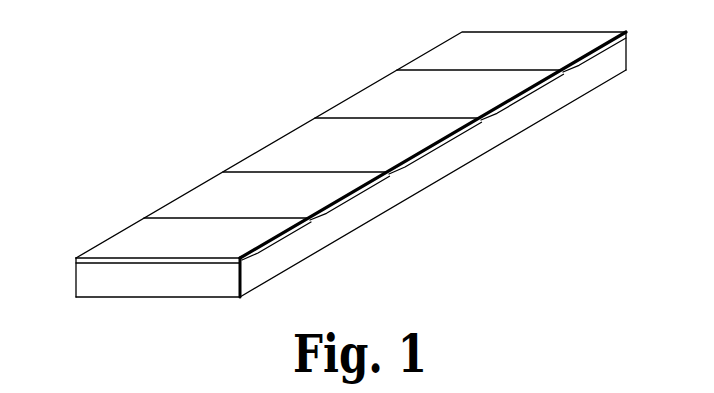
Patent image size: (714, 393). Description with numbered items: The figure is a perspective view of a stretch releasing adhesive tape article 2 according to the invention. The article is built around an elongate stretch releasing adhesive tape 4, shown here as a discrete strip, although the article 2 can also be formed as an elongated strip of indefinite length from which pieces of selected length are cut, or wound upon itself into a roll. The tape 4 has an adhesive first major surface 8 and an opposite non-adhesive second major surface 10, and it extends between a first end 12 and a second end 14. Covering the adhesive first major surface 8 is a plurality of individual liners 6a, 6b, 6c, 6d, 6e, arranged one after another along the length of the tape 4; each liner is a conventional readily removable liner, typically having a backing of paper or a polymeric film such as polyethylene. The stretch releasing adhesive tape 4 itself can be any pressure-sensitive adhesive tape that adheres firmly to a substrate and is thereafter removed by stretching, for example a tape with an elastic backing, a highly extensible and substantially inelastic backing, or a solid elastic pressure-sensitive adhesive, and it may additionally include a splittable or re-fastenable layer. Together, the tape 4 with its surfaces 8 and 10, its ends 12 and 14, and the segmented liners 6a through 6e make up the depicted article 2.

The stretch releasing adhesive tape article 2 is at (262, 81).
The stretch releasing adhesive tape 4 is at (507, 148).
The liner 6a is at (249, 237).
The liner 6b is at (322, 194).
The liner 6c is at (405, 141).
The liner 6d is at (498, 89).
The liner 6e is at (567, 54).
The adhesive first major surface 8 is at (98, 263).
The non-adhesive second major surface 10 is at (200, 299).
The first end 12 is at (125, 284).
The second end 14 is at (628, 52).